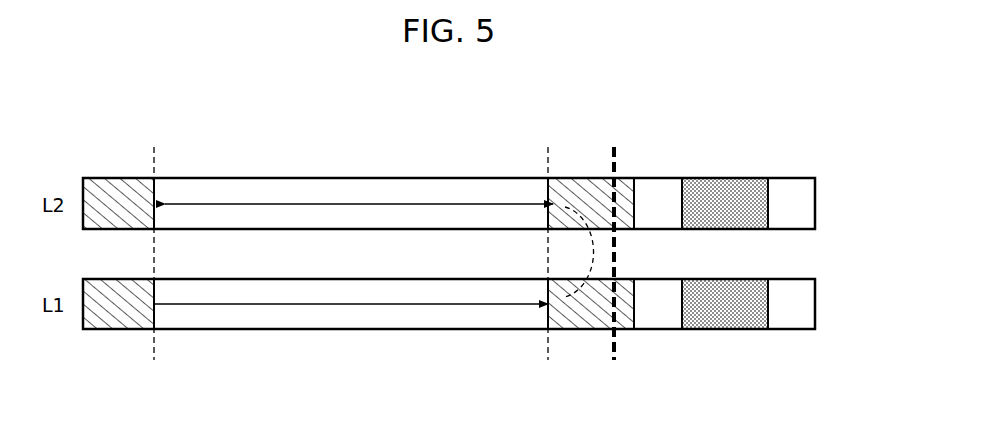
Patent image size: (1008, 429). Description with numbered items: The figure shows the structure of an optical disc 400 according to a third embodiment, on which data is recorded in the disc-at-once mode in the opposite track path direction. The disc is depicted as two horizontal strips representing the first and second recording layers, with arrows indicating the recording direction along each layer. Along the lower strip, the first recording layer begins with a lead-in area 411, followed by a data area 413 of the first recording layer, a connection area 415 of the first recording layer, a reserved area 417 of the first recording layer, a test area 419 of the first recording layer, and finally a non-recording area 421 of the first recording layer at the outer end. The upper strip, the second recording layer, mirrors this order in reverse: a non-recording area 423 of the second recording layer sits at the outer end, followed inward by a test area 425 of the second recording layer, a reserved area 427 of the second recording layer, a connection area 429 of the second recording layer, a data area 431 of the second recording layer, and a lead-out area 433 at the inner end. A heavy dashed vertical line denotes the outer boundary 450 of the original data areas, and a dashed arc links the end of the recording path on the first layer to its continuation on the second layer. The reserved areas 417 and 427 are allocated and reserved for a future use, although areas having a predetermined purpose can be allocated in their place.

The optical disc 400 is at (764, 105).
The lead-in area 411 is at (119, 320).
The data area of recording layer L1 413 is at (350, 320).
The connection area of recording layer L1 415 is at (585, 320).
The reserved area of recording layer L1 417 is at (661, 320).
The test area of recording layer L1 419 is at (728, 320).
The non-recording area of recording layer L1 421 is at (795, 320).
The non-recording area of recording layer L2 423 is at (795, 186).
The test area of recording layer L2 425 is at (728, 186).
The reserved area of recording layer L2 427 is at (661, 186).
The connection area of recording layer L2 429 is at (587, 186).
The data area of recording layer L2 431 is at (350, 186).
The lead-out area 433 is at (118, 186).
The outer boundary of original data areas 450 is at (615, 148).